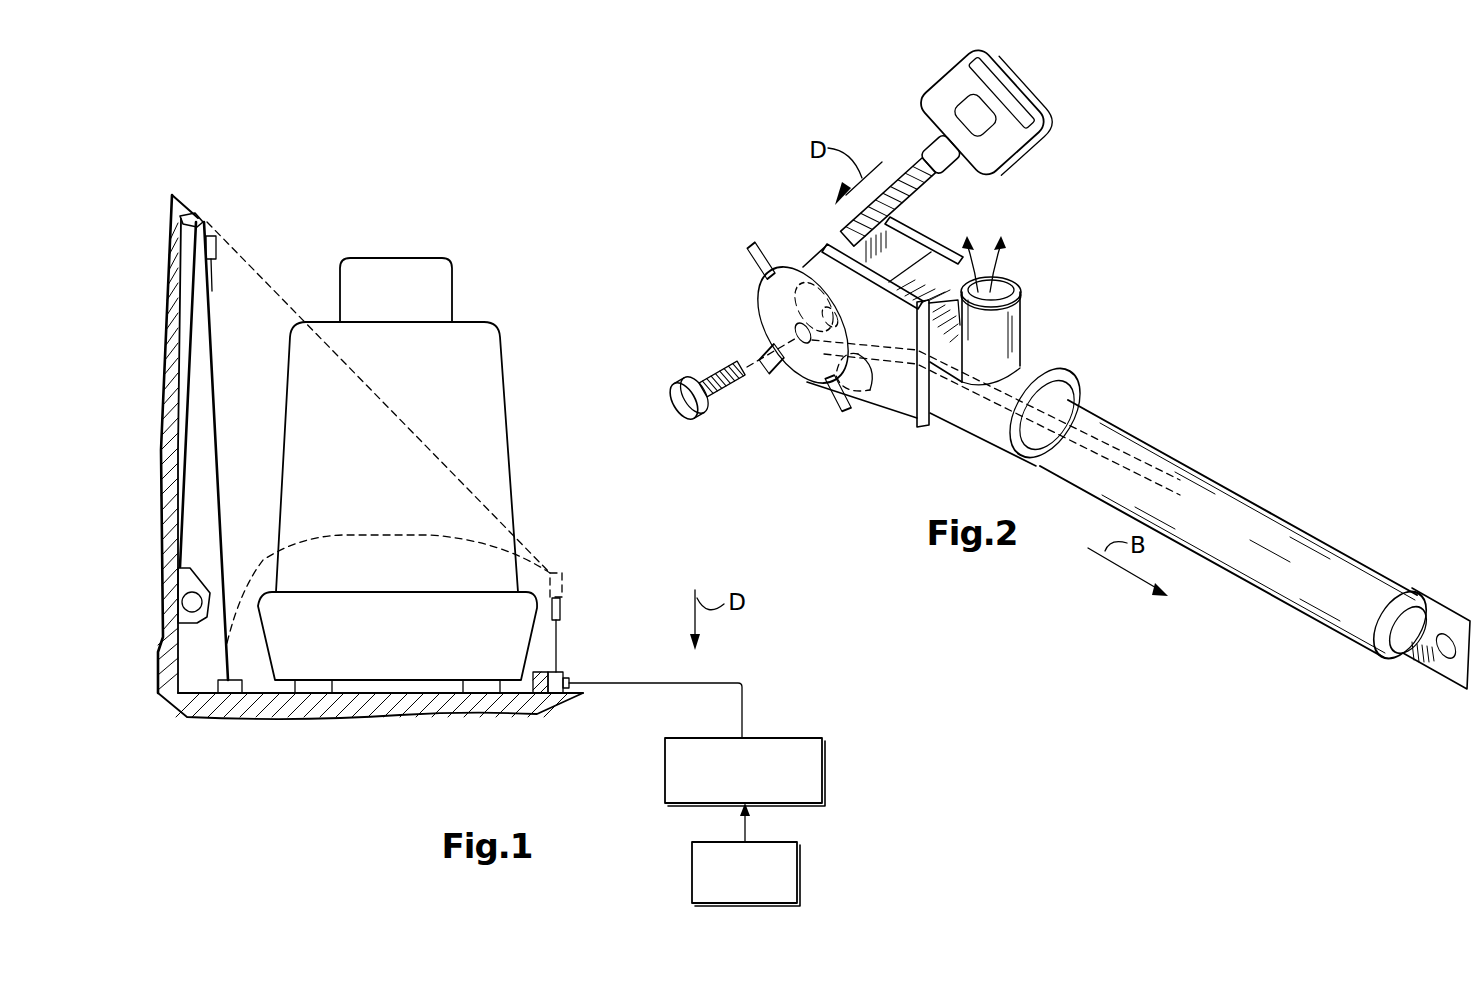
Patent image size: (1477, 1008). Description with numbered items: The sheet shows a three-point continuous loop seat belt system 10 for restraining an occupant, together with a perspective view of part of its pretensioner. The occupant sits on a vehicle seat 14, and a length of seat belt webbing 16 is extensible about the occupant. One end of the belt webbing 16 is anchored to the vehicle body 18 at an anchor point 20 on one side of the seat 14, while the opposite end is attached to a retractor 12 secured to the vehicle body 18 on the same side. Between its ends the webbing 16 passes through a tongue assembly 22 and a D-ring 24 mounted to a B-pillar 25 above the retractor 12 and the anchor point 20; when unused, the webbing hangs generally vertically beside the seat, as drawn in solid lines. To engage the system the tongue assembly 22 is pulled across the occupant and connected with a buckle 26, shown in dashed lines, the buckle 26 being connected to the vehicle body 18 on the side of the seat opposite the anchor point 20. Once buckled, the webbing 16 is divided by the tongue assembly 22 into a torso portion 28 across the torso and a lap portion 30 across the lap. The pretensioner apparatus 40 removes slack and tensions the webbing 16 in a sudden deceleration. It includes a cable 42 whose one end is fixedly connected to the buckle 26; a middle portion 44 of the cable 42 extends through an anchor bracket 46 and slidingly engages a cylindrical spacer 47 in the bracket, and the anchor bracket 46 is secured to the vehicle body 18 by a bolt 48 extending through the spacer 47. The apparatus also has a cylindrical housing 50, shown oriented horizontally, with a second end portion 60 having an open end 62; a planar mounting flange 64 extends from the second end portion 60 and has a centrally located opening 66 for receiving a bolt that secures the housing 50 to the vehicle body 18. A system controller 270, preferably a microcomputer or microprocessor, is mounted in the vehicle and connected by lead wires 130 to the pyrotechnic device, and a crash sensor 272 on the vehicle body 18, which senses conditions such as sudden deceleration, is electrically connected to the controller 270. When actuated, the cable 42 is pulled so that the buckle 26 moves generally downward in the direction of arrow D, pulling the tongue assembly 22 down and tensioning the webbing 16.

In FIG. 1, the seat belt system 10 is at (322, 234).
In FIG. 1, the retractor 12 is at (207, 577).
In FIG. 1, the vehicle seat 14 is at (508, 467).
In FIG. 1, the seat belt webbing 16 is at (222, 444).
In FIG. 1, the vehicle body 18 is at (192, 718).
In FIG. 1, the anchor point 20 is at (240, 683).
In FIG. 1, the tongue assembly 22 is at (216, 243).
In FIG. 1, the D-ring 24 is at (197, 216).
In FIG. 1, the B-pillar 25 is at (173, 318).
In FIG. 1, the buckle 26 is at (560, 615).
In FIG. 2, the buckle 26 is at (975, 150).
In FIG. 1, the torso portion 28 is at (413, 432).
In FIG. 1, the lap portion 30 is at (395, 528).
In FIG. 1, the pretensioner apparatus 40 is at (572, 664).
In FIG. 2, the pretensioner apparatus 40 is at (1232, 412).
In FIG. 2, the cable 42 is at (860, 240).
In FIG. 2, the middle portion 44 is at (867, 368).
In FIG. 2, the anchor bracket 46 is at (888, 380).
In FIG. 2, the cylindrical spacer 47 is at (797, 277).
In FIG. 2, the bolt 48 is at (680, 392).
In FIG. 2, the cylindrical housing 50 is at (1252, 486).
In FIG. 2, the second end portion 60 is at (1403, 600).
In FIG. 2, the open end 62 is at (1405, 642).
In FIG. 2, the mounting flange 64 is at (1462, 628).
In FIG. 2, the opening 66 is at (1446, 660).
In FIG. 1, the lead wires 130 is at (742, 683).
In FIG. 2, the lead wires 130 is at (978, 278).
In FIG. 1, the system controller 270 is at (815, 750).
In FIG. 1, the crash sensor 272 is at (792, 867).